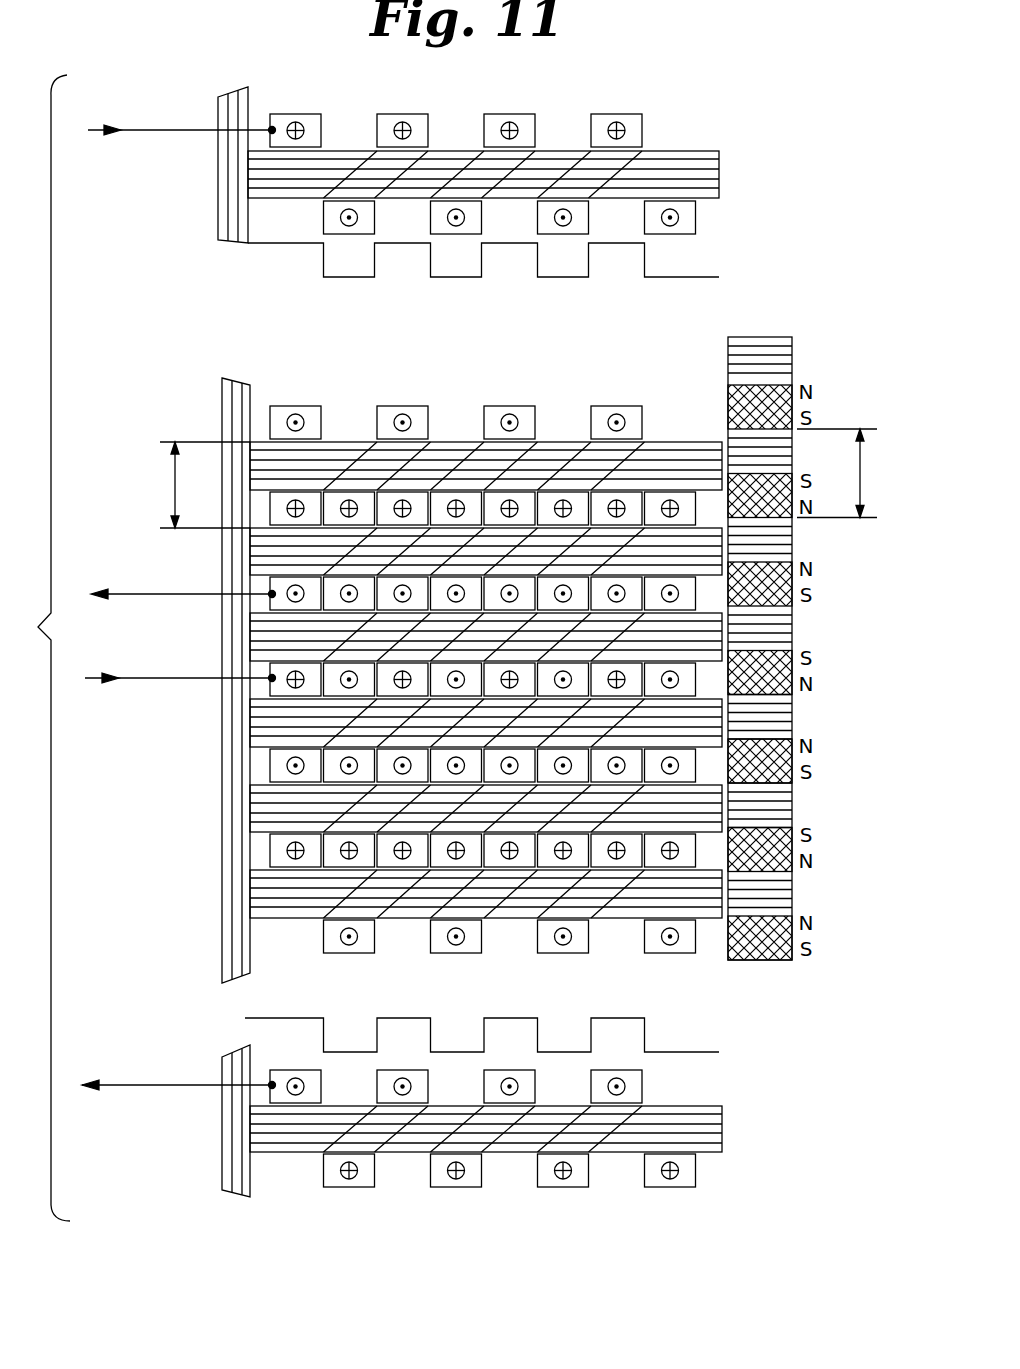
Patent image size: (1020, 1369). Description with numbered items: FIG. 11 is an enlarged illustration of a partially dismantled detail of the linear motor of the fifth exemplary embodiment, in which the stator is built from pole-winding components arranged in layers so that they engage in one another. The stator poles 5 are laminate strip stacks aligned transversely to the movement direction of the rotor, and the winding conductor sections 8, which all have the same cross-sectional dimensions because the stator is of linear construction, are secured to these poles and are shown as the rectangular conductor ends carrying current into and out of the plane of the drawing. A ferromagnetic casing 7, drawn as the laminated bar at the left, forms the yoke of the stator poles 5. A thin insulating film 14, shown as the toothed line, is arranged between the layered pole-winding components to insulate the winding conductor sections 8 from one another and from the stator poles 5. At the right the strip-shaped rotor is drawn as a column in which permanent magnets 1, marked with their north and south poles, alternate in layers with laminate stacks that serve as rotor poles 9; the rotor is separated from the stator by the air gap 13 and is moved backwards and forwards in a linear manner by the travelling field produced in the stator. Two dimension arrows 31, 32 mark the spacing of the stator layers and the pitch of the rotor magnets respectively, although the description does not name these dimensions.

The permanent magnet 1 is at (773, 673).
The stator pole 5 is at (282, 1130).
The ferromagnetic casing 7 is at (235, 826).
The winding conductor section 8 is at (281, 412).
The rotor pole 9 is at (775, 712).
The air gap 13 is at (724, 547).
The insulating film 14 is at (245, 1018).
The coil pitch 31 is at (194, 485).
The pole pitch 32 is at (848, 473).